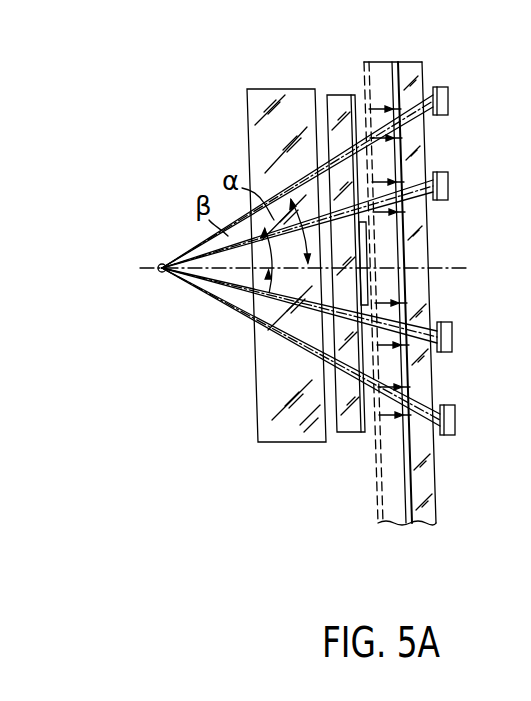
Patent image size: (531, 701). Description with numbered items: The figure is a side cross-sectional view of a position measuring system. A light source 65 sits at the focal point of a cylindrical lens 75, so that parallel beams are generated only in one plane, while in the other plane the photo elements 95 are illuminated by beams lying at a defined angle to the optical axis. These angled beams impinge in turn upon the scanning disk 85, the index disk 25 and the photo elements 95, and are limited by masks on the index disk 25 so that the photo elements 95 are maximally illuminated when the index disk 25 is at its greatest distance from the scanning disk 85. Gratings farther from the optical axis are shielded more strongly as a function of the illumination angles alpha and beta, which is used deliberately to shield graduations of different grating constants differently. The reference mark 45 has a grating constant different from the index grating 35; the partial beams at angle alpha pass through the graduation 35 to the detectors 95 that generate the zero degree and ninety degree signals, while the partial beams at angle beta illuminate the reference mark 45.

The index disk 25 is at (432, 270).
The index grating 35 is at (426, 98).
The reference mark 45 is at (407, 196).
The light source 65 is at (164, 274).
The cylindrical lens 75 is at (262, 98).
The scanning disk 85 is at (333, 98).
The photo elements 95 is at (448, 99).